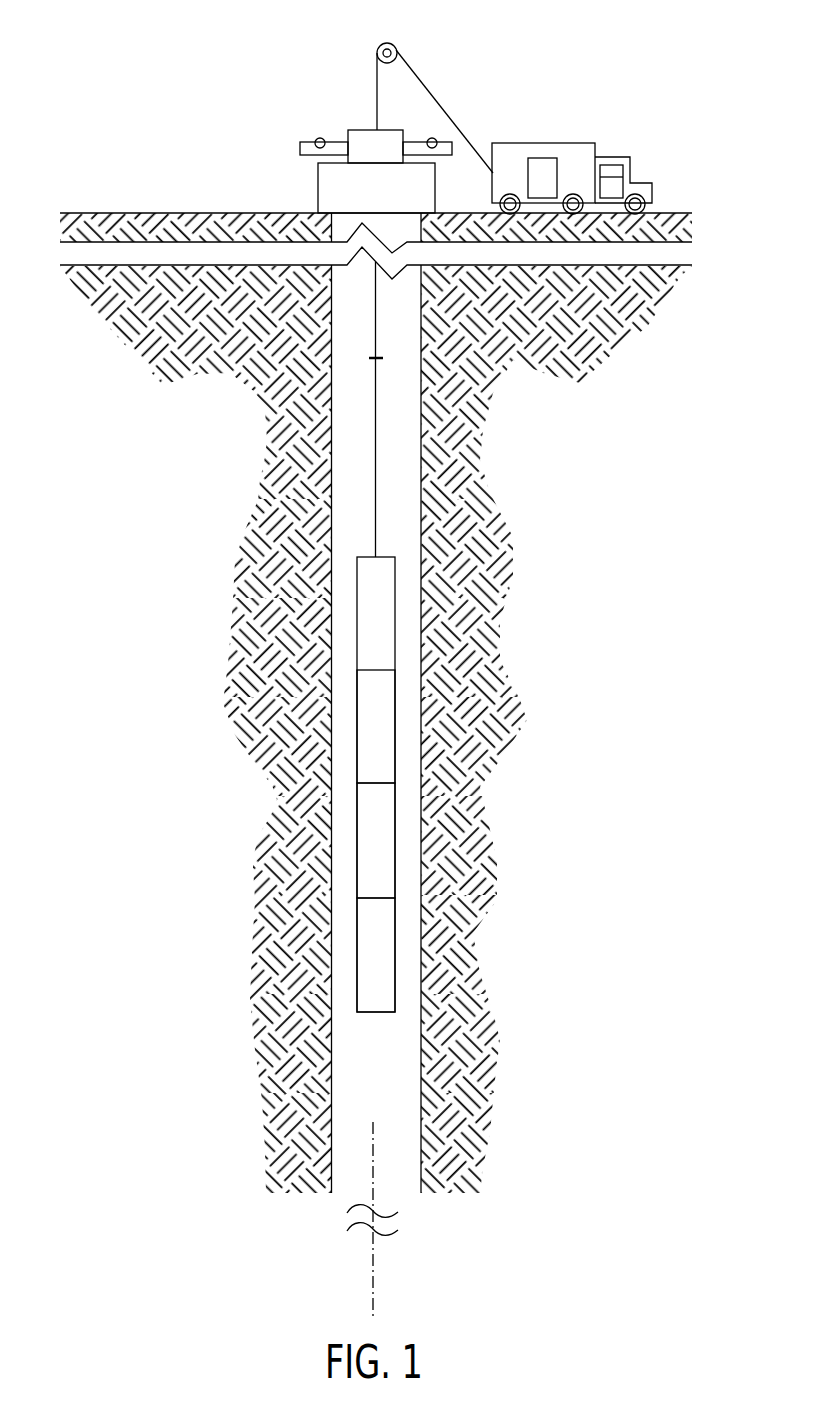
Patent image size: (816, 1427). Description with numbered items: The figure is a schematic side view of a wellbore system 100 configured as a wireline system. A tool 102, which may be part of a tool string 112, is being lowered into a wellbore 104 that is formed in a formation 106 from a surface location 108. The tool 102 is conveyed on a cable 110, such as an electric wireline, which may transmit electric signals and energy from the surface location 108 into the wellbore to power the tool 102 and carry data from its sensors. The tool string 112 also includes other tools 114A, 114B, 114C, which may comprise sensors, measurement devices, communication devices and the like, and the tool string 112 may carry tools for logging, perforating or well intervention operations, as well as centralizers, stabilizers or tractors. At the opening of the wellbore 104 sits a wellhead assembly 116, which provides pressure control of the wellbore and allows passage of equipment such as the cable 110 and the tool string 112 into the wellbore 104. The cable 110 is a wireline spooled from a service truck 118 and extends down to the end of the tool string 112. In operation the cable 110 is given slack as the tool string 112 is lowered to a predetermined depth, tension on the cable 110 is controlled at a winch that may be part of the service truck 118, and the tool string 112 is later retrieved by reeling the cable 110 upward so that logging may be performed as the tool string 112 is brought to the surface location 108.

The wellbore system 100 is at (503, 87).
The tool 102 is at (373, 613).
The wellbore 104 is at (297, 329).
The formation 106 is at (562, 471).
The surface location 108 is at (680, 213).
The cable 110 is at (445, 110).
The tool string 112 is at (546, 593).
The tool 114A is at (383, 735).
The tool 114B is at (383, 848).
The tool 114C is at (383, 962).
The wellhead assembly 116 is at (359, 117).
The service truck 118 is at (618, 131).